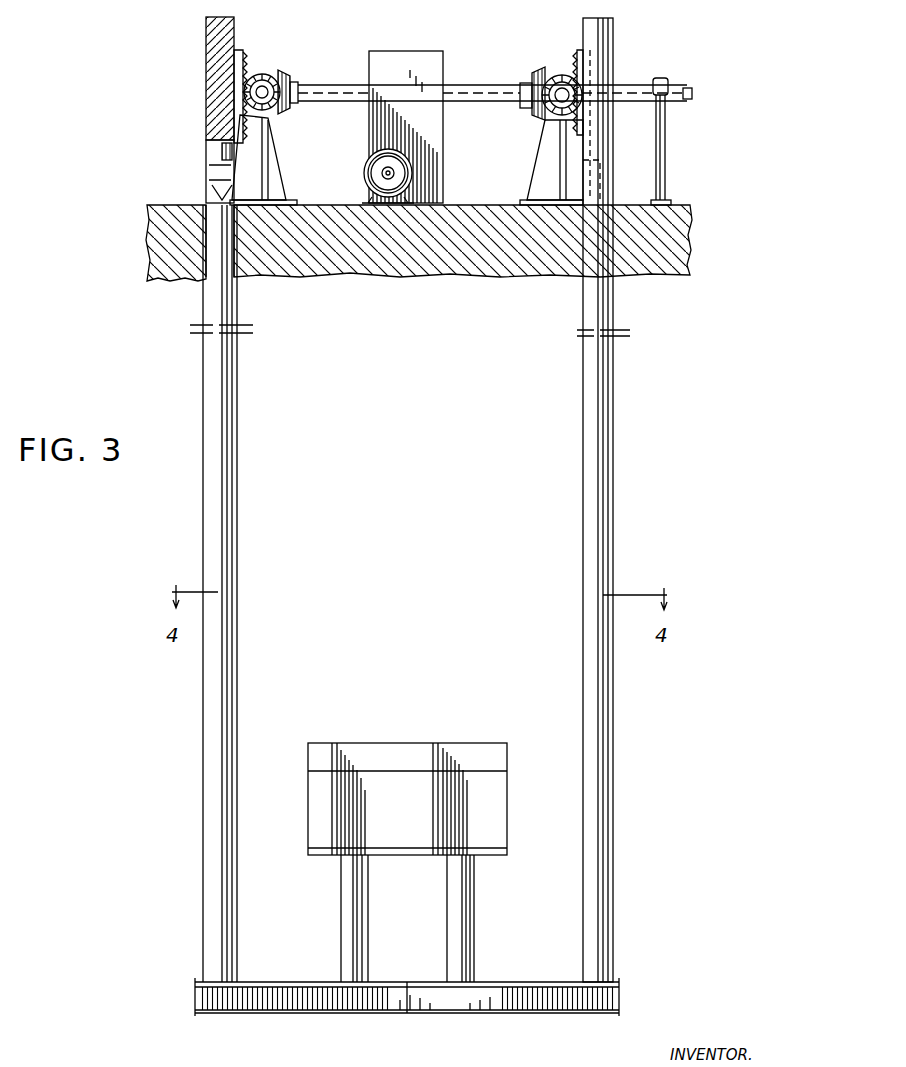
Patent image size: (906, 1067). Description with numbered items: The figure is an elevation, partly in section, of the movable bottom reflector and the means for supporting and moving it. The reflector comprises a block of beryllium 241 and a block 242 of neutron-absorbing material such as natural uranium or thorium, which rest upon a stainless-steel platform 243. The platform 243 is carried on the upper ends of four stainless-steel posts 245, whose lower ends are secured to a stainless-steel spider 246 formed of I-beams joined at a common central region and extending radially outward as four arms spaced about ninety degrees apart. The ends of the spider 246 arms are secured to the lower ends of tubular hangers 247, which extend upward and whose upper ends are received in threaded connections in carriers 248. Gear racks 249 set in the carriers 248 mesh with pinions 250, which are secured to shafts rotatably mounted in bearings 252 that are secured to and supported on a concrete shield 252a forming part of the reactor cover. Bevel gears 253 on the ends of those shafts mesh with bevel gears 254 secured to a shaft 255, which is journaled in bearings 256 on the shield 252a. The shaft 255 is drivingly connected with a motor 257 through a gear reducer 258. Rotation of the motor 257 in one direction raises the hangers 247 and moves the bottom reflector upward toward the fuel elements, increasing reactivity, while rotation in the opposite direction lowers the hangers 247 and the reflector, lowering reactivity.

The block of beryllium 241 is at (492, 765).
The block of neutron-absorbing material 242 is at (497, 818).
The platform 243 is at (495, 856).
The posts 245 is at (471, 960).
The spider 246 is at (390, 1003).
The tubular hangers 247 is at (228, 666).
The carriers 248 is at (206, 90).
The gear racks 249 is at (240, 55).
The pinions 250 is at (250, 80).
The bearings 252 is at (275, 178).
The concrete shield 252a is at (472, 270).
The bevel gears 253 is at (560, 74).
The bevel gears 254 is at (280, 112).
The shaft 255 is at (443, 101).
The bearings 256 is at (668, 183).
The motor 257 is at (375, 180).
The gear reducer 258 is at (386, 62).